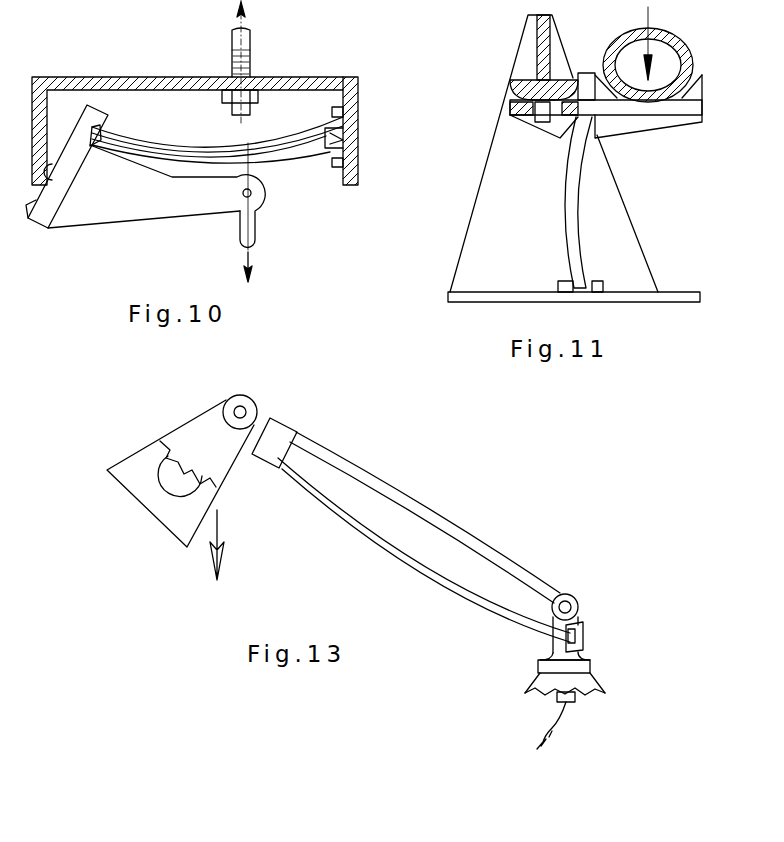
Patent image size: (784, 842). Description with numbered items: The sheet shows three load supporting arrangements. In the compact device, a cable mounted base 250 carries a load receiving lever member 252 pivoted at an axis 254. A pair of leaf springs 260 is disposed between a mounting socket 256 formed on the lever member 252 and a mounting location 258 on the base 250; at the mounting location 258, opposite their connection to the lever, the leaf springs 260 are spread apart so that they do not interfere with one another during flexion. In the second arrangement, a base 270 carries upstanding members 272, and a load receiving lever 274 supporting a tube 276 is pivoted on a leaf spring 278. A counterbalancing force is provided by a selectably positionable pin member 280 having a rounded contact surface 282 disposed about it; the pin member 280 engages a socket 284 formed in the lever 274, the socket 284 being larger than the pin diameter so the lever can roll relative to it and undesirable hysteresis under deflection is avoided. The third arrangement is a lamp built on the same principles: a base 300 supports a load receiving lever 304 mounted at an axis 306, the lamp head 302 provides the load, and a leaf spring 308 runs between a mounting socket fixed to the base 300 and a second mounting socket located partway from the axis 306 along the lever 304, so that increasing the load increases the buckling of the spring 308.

In FIG. 10, the cable mounted base 250 is at (176, 77).
In FIG. 10, the load receiving lever member 252 is at (173, 207).
In FIG. 10, the axis 254 is at (60, 167).
In FIG. 10, the mounting socket 256 is at (92, 143).
In FIG. 10, the mounting location 258 is at (345, 141).
In FIG. 10, the leaf springs 260 is at (293, 157).
In FIG. 11, the base 270 is at (517, 295).
In FIG. 11, the upstanding members 272 is at (487, 216).
In FIG. 11, the load receiving lever 274 is at (635, 131).
In FIG. 11, the tube 276 is at (676, 34).
In FIG. 11, the leaf spring 278 is at (568, 220).
In FIG. 11, the selectably positionable pin member 280 is at (545, 123).
In FIG. 11, the rounded contact surface 282 is at (510, 92).
In FIG. 11, the socket 284 is at (558, 112).
In FIG. 13, the base 300 is at (588, 660).
In FIG. 13, the lamp head 302 is at (216, 470).
In FIG. 13, the load receiving lever 304 is at (390, 497).
In FIG. 13, the axis 306 is at (571, 602).
In FIG. 13, the leaf spring 308 is at (440, 582).